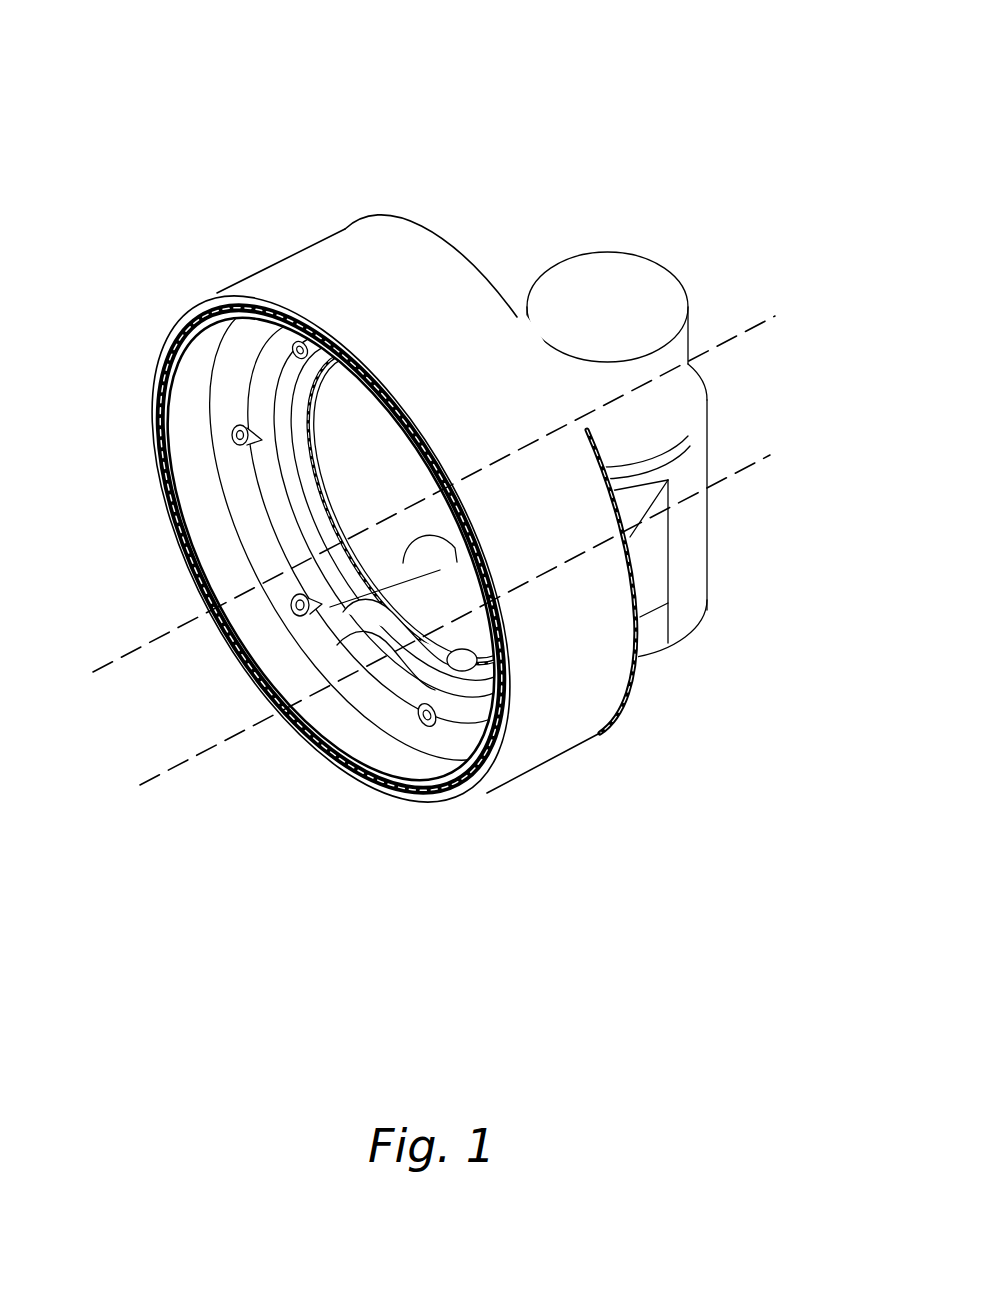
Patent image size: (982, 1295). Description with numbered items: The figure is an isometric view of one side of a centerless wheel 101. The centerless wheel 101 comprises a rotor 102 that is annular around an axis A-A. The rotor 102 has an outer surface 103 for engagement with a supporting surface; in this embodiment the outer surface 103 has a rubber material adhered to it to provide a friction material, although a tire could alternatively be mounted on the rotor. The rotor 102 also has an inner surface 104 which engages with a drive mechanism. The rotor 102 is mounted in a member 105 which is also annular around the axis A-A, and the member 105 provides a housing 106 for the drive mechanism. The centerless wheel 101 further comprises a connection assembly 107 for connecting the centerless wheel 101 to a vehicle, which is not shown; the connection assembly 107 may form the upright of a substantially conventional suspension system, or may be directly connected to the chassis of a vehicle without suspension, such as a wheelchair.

The centerless wheel 101 is at (604, 80).
The rotor 102 is at (436, 246).
The outer surface 103 is at (320, 270).
The inner surface 104 is at (215, 530).
The member 105 is at (388, 718).
The housing 106 is at (453, 592).
The connection assembly 107 is at (700, 521).